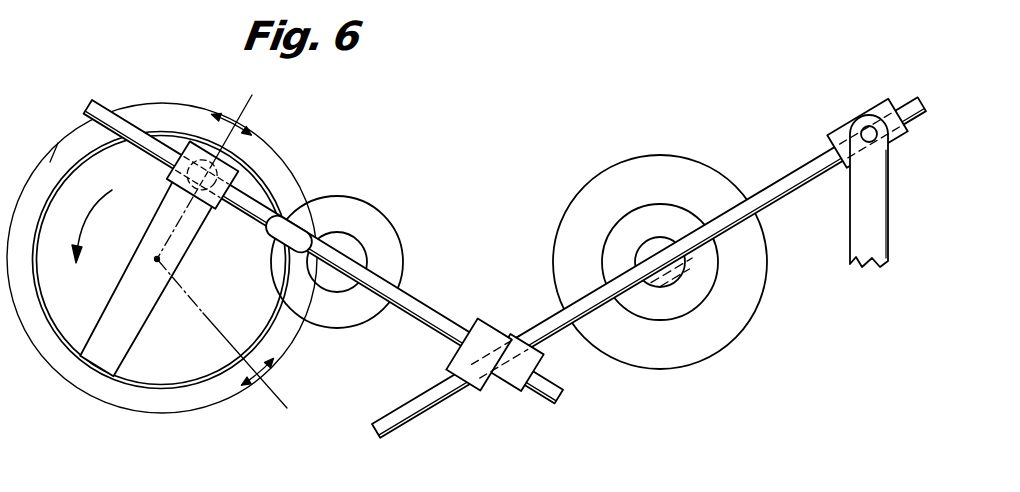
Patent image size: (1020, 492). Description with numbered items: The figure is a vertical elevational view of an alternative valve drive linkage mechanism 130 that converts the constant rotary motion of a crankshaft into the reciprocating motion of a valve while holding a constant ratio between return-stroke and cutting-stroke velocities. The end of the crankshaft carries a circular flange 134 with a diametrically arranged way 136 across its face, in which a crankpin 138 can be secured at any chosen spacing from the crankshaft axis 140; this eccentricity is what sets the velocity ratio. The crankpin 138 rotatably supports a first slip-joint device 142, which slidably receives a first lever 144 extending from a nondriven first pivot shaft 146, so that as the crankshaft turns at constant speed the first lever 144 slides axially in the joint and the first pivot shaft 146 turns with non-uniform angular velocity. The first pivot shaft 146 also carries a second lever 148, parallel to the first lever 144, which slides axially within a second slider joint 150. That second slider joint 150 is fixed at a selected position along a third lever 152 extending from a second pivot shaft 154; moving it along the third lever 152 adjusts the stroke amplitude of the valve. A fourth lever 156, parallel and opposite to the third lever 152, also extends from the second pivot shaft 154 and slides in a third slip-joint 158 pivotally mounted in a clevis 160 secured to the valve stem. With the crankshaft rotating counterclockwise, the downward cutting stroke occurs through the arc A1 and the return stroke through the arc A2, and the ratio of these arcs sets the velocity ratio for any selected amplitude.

The valve drive linkage mechanism 130 is at (478, 286).
The circular flange 134 is at (138, 390).
The way 136 is at (143, 327).
The crankpin 138 is at (168, 189).
The axis 140 is at (158, 259).
The first slip-joint device 142 is at (193, 147).
The first lever 144 is at (100, 109).
The first pivot shaft 146 is at (357, 237).
The second lever 148 is at (443, 324).
The second slider joint 150 is at (480, 330).
The third lever 152 is at (562, 322).
The second pivot shaft 154 is at (659, 241).
The fourth lever 156 is at (768, 192).
The third slip-joint 158 is at (838, 135).
The clevis 160 is at (862, 245).
The arc A1 is at (38, 159).
The arc A2 is at (263, 153).